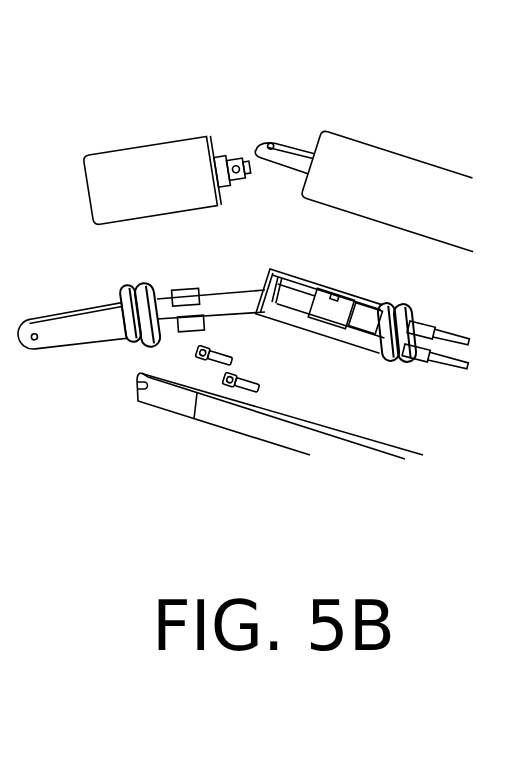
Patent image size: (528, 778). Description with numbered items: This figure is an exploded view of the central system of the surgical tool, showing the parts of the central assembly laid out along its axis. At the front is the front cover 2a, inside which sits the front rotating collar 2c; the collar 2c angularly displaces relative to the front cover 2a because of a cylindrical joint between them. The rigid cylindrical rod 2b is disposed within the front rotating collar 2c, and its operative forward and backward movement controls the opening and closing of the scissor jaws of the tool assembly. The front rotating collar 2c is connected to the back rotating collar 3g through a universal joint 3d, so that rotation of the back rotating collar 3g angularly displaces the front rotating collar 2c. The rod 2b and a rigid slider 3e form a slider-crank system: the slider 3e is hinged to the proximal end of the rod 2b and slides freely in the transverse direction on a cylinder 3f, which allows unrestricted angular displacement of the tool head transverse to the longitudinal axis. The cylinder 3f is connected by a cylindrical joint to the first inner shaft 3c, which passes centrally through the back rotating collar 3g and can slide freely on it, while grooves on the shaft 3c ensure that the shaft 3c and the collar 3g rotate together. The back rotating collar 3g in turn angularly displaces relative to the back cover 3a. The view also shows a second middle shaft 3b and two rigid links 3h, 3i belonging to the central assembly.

The front cover 2a is at (145, 137).
The rigid cylindrical rod 2b is at (190, 282).
The front rotating collar 2c is at (75, 355).
The back cover 3a is at (412, 148).
The second middle shaft 3b is at (310, 413).
The first inner shaft 3c is at (448, 324).
The universal joint 3d is at (268, 267).
The rigid slider 3e is at (295, 292).
The cylinder 3f is at (343, 301).
The back rotating collar 3g is at (391, 302).
The rigid link 3h is at (233, 360).
The rigid link 3i is at (263, 387).